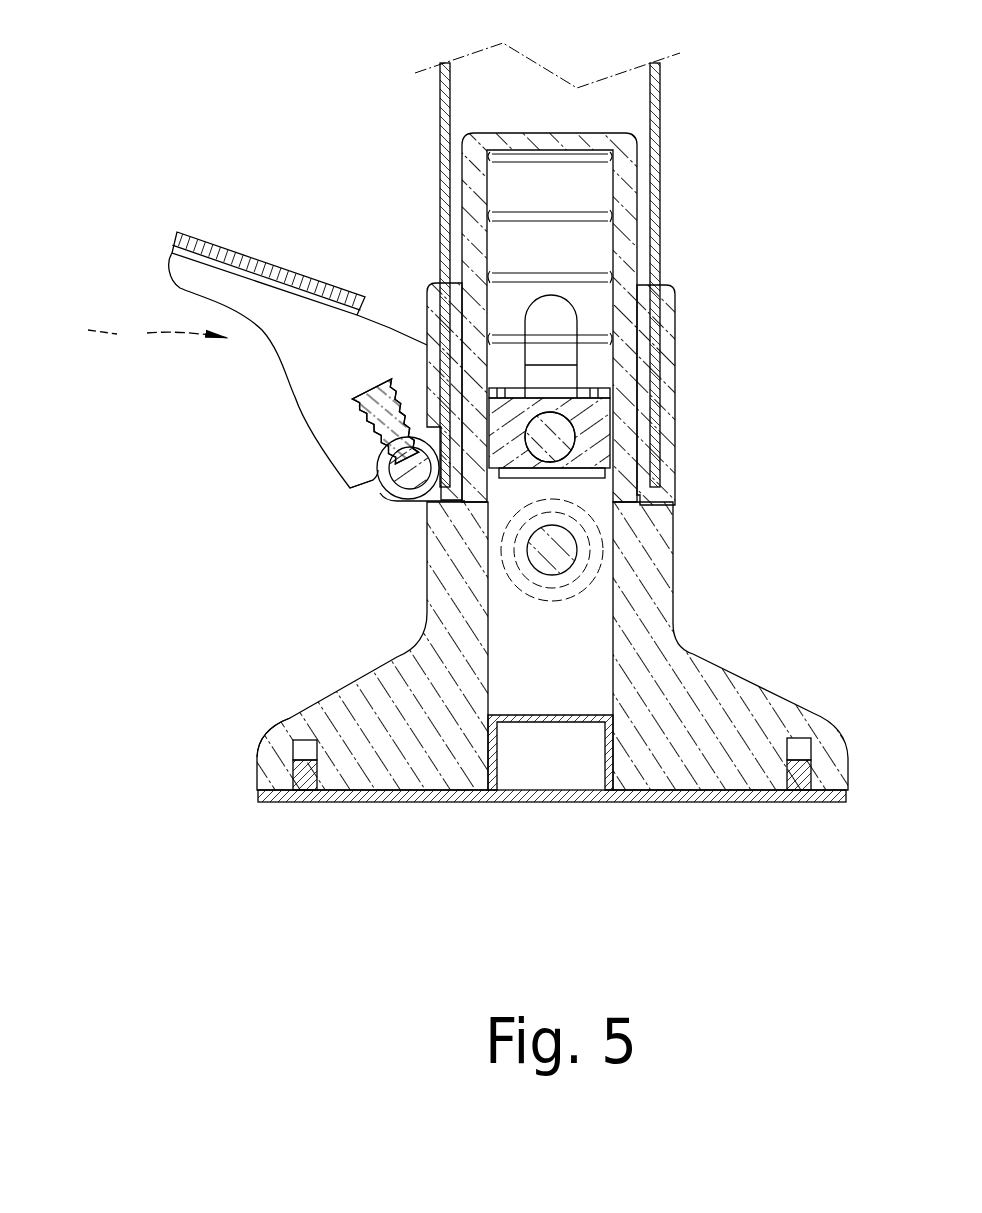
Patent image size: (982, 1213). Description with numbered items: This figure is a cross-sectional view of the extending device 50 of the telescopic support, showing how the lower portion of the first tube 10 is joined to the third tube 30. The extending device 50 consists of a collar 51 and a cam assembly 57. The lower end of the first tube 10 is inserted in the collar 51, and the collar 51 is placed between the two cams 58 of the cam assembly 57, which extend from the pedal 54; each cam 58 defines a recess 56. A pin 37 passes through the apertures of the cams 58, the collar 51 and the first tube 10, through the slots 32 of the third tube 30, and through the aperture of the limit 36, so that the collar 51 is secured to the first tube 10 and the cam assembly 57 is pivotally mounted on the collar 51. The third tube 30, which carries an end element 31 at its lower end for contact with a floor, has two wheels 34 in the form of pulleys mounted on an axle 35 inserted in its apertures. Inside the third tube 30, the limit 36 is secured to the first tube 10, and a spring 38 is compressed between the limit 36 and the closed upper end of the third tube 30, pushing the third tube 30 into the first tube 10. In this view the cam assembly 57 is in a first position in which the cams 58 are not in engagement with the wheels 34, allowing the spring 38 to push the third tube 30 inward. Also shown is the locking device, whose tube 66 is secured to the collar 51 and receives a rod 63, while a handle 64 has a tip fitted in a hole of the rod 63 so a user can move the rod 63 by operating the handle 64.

The first tube 10 is at (660, 82).
The third tube 30 is at (672, 512).
The end element 31 is at (325, 703).
The slots 32 is at (553, 310).
The wheels 34 is at (600, 583).
The axle 35 is at (575, 550).
The limit 36 is at (605, 408).
The pin 37 is at (563, 440).
The spring 38 is at (545, 153).
The extending device 50 is at (313, 200).
The collar 51 is at (665, 342).
The pedal 54 is at (205, 235).
The recess 56 is at (373, 485).
The cam assembly 57 is at (137, 329).
The cams 58 is at (390, 332).
The rod 63 is at (392, 498).
The handle 64 is at (350, 400).
The tube 66 is at (378, 463).